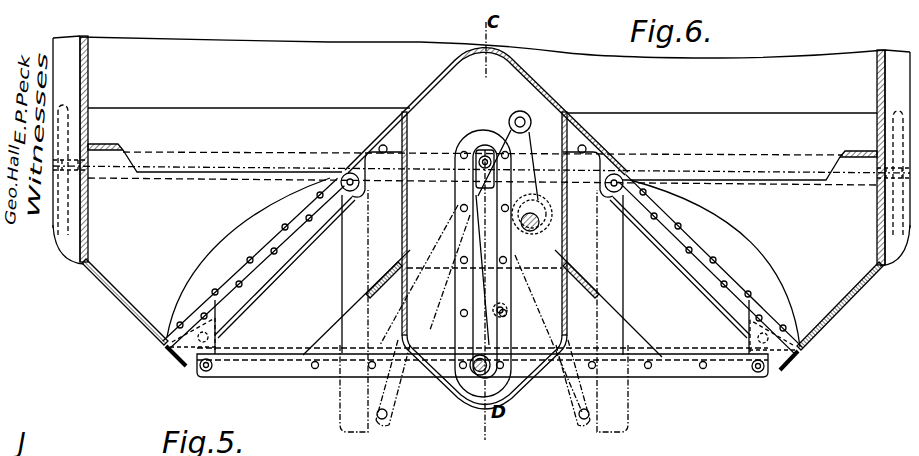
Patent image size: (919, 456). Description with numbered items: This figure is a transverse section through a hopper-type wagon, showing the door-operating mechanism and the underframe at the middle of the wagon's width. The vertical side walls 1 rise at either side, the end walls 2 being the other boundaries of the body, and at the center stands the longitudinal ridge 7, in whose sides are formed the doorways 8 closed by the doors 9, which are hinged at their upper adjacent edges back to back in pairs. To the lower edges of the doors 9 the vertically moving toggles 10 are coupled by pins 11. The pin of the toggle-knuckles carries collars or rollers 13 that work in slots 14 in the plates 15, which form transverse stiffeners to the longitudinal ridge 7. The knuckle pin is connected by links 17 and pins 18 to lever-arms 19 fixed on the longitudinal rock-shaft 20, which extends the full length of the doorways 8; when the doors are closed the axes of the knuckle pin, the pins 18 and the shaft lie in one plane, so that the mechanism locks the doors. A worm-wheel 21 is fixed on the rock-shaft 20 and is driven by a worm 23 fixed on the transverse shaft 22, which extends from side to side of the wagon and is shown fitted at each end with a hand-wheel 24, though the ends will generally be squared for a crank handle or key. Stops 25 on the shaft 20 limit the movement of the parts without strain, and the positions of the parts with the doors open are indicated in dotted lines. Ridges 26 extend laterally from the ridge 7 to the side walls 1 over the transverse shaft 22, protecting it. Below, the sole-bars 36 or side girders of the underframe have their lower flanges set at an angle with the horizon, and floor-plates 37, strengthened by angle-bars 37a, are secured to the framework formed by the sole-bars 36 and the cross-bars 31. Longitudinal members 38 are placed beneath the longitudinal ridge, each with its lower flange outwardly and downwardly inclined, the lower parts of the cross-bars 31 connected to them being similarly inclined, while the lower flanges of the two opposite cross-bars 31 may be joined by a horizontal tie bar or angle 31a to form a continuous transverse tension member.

The vertical side walls 1 is at (98, 47).
The end walls 2 is at (486, 253).
The longitudinal ridge 7 is at (513, 60).
The doorways 8 is at (483, 264).
The doors 9 is at (352, 318).
The toggles 10 is at (333, 377).
The pins 11 is at (197, 377).
The collars or rollers 13 is at (494, 358).
The slots 14 is at (480, 299).
The plates 15 is at (482, 174).
The links 17 is at (480, 333).
The pins 18 is at (510, 311).
The lever-arms 19 is at (479, 278).
The longitudinal rock-shaft 20 is at (490, 175).
The worm-wheel 21 is at (471, 270).
The transverse shaft 22 is at (173, 172).
The worm 23 is at (547, 137).
The hand-wheel 24 is at (62, 197).
The stops 25 is at (578, 190).
The ridges 26 is at (232, 114).
The cross-bars 31 is at (482, 327).
The horizontal tie bar or angle 31a is at (278, 377).
The sole-bars 36 is at (89, 241).
The floor-plates 37 is at (138, 305).
The angle-bars 37a is at (166, 346).
The longitudinal members 38 is at (394, 237).